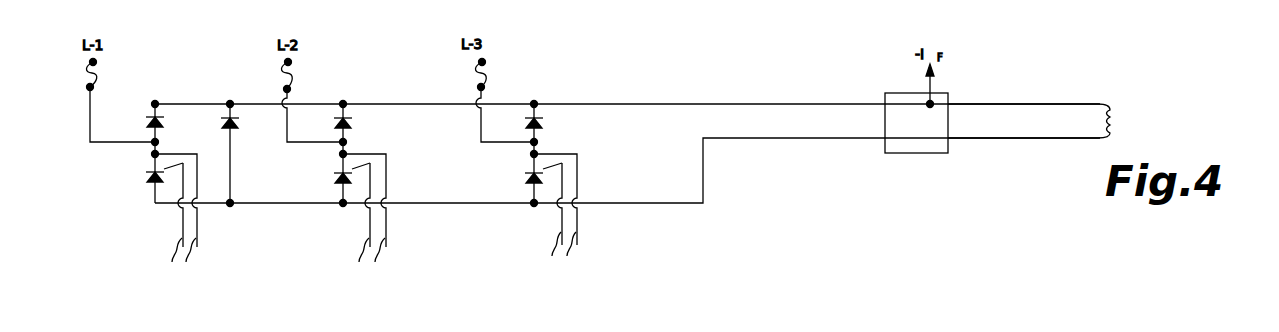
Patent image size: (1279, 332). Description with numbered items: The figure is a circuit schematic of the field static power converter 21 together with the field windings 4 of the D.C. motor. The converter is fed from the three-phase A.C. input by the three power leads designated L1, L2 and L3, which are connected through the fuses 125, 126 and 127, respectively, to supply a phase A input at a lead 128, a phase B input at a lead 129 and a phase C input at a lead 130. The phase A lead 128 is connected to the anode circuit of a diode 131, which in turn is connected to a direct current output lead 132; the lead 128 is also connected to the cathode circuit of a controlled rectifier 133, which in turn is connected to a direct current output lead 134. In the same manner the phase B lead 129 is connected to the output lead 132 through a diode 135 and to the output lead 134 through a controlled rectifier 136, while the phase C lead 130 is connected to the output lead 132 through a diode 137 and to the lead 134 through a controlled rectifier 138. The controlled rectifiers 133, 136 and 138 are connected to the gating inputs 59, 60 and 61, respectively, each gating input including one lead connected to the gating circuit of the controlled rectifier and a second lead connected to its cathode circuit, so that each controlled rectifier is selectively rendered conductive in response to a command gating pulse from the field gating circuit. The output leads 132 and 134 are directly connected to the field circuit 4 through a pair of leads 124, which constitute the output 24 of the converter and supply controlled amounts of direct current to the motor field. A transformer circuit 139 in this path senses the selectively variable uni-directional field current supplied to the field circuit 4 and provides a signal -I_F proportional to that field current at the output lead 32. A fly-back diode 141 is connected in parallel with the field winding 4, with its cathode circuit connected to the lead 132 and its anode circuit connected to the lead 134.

The fuse 125 is at (98, 72).
The fuse 126 is at (296, 74).
The fuse 127 is at (492, 74).
The phase A lead 128 is at (113, 143).
The phase B lead 129 is at (318, 143).
The phase C lead 130 is at (498, 143).
The diode 131 is at (146, 121).
The controlled rectifier 133 is at (146, 175).
The diode 135 is at (352, 123).
The controlled rectifier 136 is at (334, 176).
The diode 137 is at (543, 125).
The controlled rectifier 138 is at (525, 176).
The fly-back diode 141 is at (236, 127).
The gating input 59 is at (176, 220).
The gating input 60 is at (364, 217).
The gating input 61 is at (558, 213).
The direct current output lead 132 is at (762, 103).
The direct current output lead 134 is at (798, 140).
The output lead 32 is at (934, 80).
The transformer circuit 139 is at (948, 153).
The pair of leads 124 is at (1044, 105).
The output 24 is at (1042, 93).
The field static power converter 21 is at (1034, 160).
The field windings 4 is at (1111, 112).